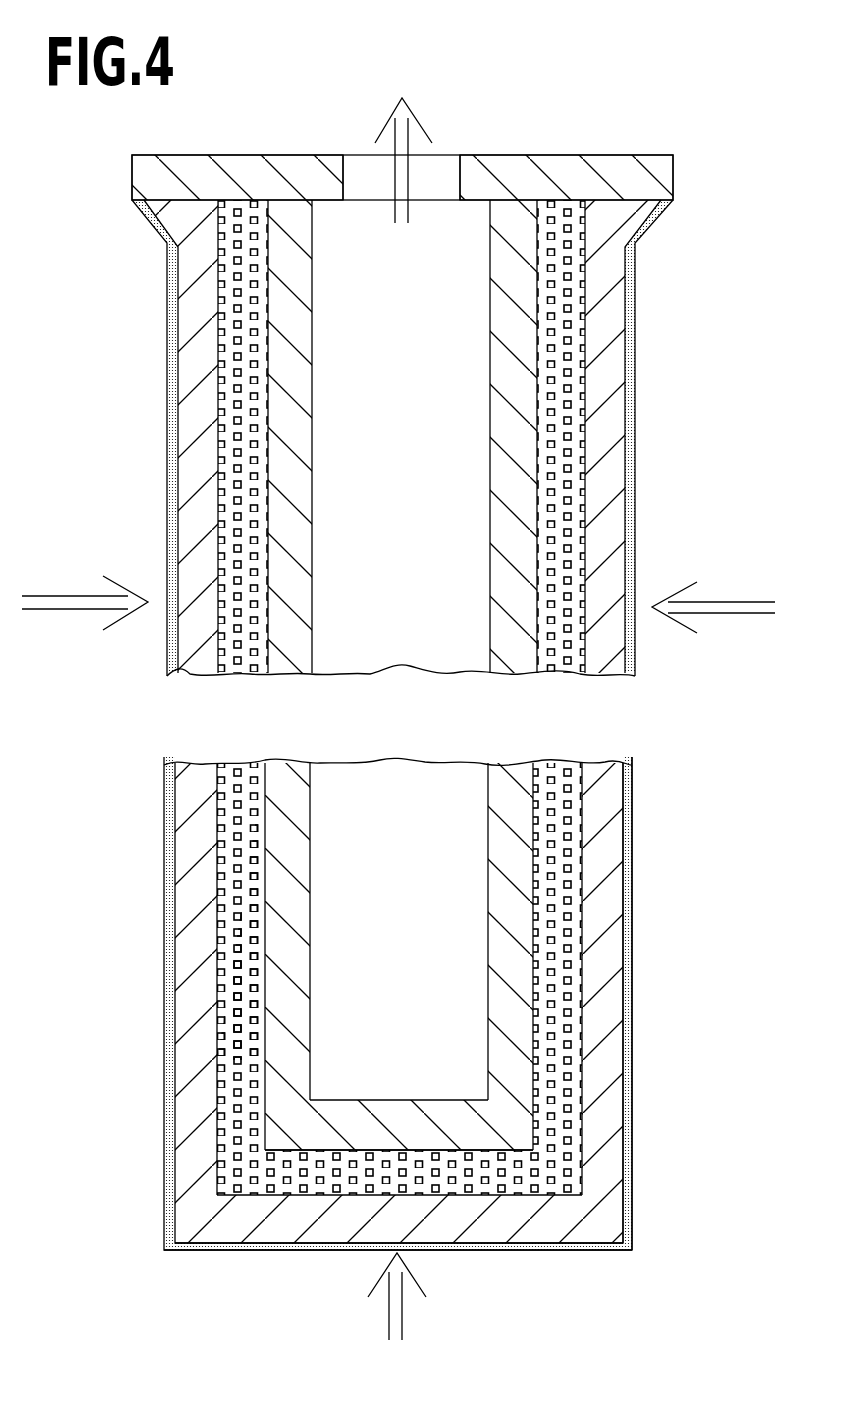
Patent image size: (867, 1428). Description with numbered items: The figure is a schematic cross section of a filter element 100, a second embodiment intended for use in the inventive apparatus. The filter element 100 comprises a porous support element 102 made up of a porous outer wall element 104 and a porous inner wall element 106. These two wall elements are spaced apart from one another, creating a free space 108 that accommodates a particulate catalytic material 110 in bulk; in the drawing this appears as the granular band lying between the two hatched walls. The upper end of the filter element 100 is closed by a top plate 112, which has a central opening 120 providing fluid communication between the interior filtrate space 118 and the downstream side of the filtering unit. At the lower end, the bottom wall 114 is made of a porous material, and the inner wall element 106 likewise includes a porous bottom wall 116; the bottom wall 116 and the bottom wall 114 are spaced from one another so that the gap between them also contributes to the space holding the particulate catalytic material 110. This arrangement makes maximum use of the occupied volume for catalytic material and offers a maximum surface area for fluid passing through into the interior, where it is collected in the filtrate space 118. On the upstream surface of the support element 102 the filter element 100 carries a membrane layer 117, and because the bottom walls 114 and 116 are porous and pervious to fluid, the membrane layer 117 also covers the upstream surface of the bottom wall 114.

The filter element 100 is at (398, 693).
The porous support element 102 is at (645, 304).
The porous outer wall element 104 is at (603, 443).
The porous inner wall element 106 is at (290, 357).
The free space 108 is at (230, 970).
The particulate catalytic material 110 is at (240, 847).
The top plate 112 is at (548, 168).
The bottom wall 114 is at (305, 1228).
The porous bottom wall 116 is at (460, 1115).
The membrane layer 117 is at (634, 898).
The filtrate space 118 is at (430, 605).
The central opening 120 is at (358, 170).